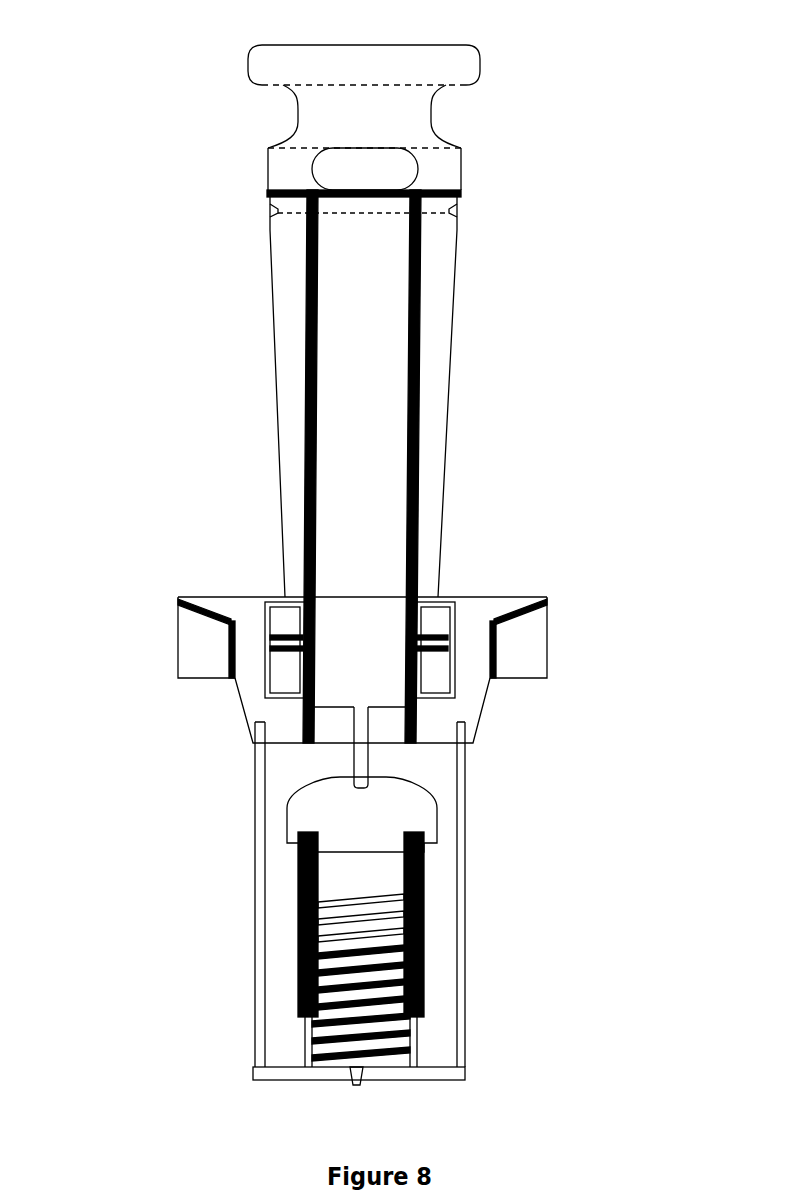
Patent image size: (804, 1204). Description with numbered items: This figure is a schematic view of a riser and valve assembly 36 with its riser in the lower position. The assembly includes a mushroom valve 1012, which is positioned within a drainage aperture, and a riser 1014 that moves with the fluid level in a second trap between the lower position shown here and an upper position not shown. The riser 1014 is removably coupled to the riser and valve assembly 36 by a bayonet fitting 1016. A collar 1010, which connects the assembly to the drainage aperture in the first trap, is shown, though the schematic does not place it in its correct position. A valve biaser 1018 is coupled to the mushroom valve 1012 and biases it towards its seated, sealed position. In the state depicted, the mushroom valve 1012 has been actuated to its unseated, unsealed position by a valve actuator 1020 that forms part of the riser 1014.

The riser and valve assembly 36 is at (548, 152).
The collar 1010 is at (483, 713).
The mushroom valve 1012 is at (312, 818).
The riser 1014 is at (340, 425).
The bayonet fitting 1016 is at (285, 642).
The valve biaser 1018 is at (387, 1047).
The valve actuator 1020 is at (370, 760).